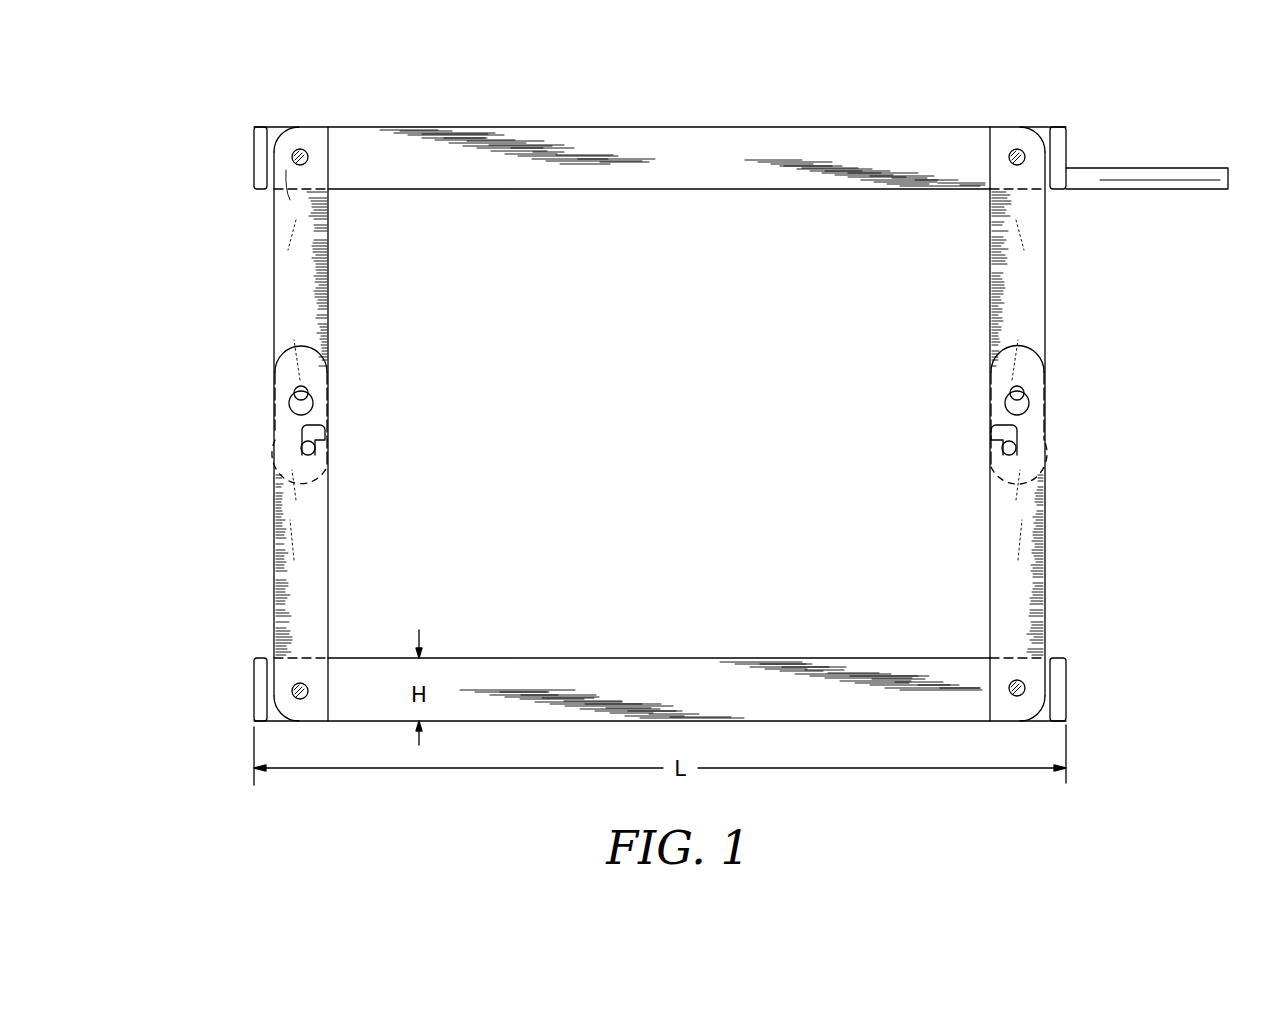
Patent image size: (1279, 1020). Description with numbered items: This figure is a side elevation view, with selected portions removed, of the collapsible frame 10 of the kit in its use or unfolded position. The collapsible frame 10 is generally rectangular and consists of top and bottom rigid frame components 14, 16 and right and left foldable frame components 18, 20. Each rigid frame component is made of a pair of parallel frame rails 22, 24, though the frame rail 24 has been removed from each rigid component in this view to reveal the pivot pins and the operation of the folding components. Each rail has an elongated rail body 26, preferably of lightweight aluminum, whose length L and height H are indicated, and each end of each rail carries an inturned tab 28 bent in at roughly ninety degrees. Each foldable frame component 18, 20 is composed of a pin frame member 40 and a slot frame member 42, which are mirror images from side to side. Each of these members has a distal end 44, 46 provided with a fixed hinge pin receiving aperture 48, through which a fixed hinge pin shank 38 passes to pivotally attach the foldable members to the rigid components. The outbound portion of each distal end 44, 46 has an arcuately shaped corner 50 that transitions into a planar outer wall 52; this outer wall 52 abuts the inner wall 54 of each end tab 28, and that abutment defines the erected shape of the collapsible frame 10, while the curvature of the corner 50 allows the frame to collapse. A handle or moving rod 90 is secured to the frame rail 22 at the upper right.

The collapsible frame 10 is at (878, 72).
The top rigid frame component 14 is at (620, 205).
The bottom rigid frame component 16 is at (602, 645).
The right foldable frame component 18 is at (970, 350).
The left foldable frame component 20 is at (350, 337).
The frame rail 22 is at (665, 148).
The frame rail 24 is at (660, 672).
The rail body 26 is at (706, 168).
The inturned tab 28 is at (261, 143).
The fixed hinge pin shank 38 is at (300, 150).
The pin frame member 40 is at (1057, 313).
The slot frame member 42 is at (1058, 540).
The distal end 44 is at (1007, 142).
The distal end 46 is at (1001, 708).
The fixed hinge pin receiving aperture 48 is at (1025, 688).
The arcuately shaped corner 50 is at (1062, 145).
The planar outer wall 52 is at (275, 173).
The inner wall 54 is at (262, 165).
The handle or moving rod 90 is at (1198, 175).